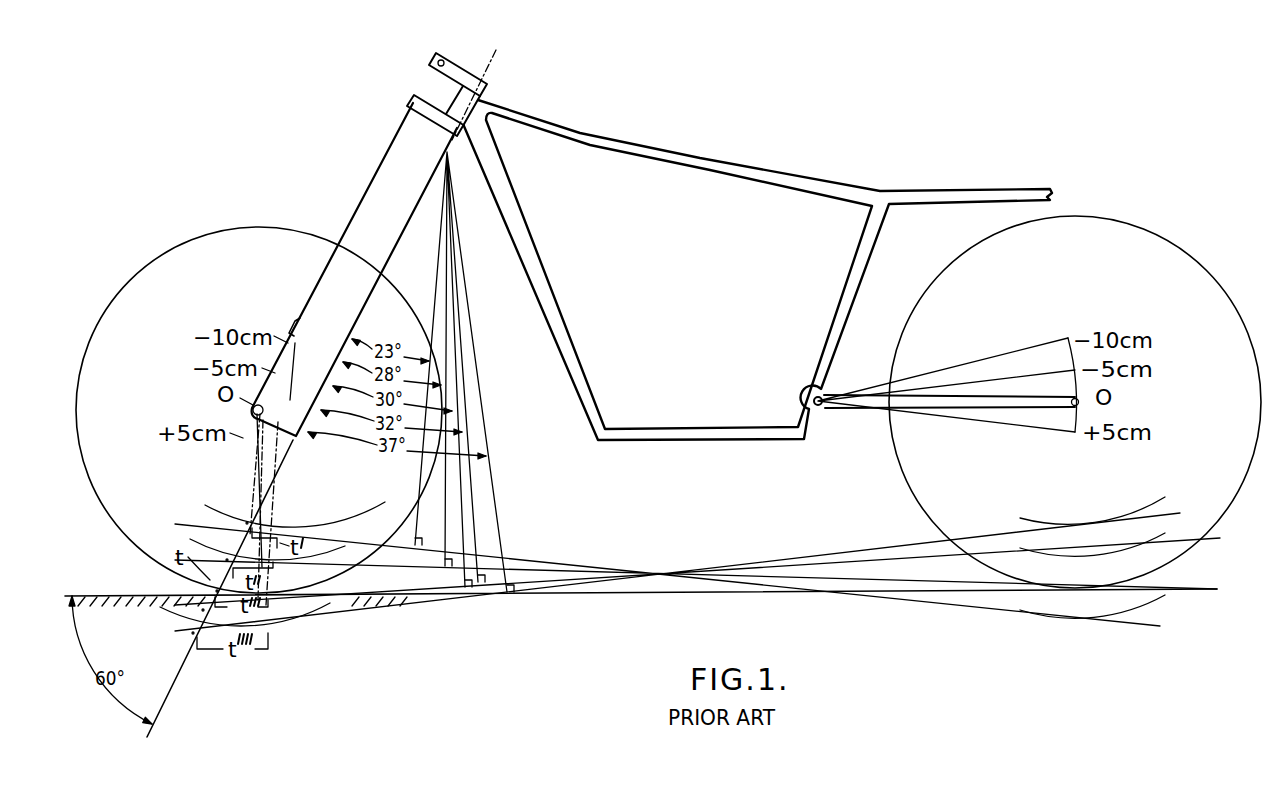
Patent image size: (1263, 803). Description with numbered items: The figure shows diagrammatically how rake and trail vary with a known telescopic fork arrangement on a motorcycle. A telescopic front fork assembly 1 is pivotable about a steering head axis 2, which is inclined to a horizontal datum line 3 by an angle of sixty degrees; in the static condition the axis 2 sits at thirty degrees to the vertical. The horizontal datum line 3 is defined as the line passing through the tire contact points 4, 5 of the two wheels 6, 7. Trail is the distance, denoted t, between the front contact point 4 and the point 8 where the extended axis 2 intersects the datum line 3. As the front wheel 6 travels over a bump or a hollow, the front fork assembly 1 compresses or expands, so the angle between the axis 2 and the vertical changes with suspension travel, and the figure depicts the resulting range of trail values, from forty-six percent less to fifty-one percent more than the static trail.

The telescopic front fork assembly 1 is at (302, 318).
The steering head axis 2 is at (490, 62).
The horizontal datum line 3 is at (110, 594).
The tire contact point 4 is at (262, 522).
The tire contact point 5 is at (1080, 588).
The front wheel 6 is at (232, 228).
The rear wheel 7 is at (1141, 222).
The point of intersection 8 is at (247, 523).